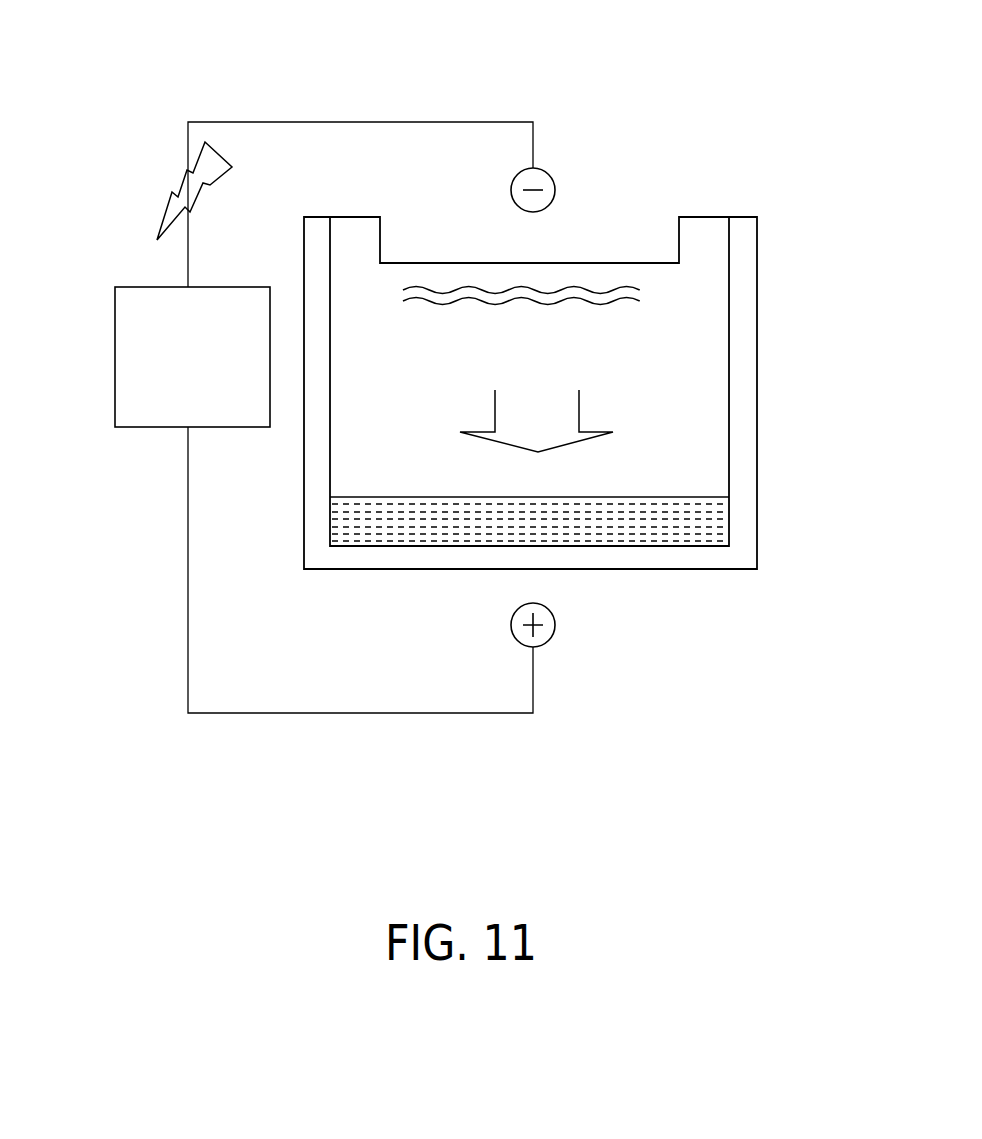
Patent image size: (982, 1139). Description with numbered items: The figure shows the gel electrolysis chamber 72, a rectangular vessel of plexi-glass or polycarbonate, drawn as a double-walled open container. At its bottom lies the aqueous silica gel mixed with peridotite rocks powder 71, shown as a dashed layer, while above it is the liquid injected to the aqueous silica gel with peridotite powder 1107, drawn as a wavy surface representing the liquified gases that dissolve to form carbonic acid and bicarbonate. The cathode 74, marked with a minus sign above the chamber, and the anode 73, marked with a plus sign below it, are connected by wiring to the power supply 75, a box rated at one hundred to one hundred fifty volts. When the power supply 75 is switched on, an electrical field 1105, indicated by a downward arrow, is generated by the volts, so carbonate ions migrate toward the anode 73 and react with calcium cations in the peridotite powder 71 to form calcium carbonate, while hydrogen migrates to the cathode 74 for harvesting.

The power supply 75 is at (115, 265).
The cathode 74 is at (515, 173).
The anode 73 is at (553, 650).
The electrolysis chamber 72 is at (738, 293).
The aqueous silica gel mixed with peridotite rocks powder 71 is at (601, 532).
The liquid injected to aqueous silica gel with peridotite powder 1107 is at (582, 287).
The electrical field 1105 is at (579, 397).